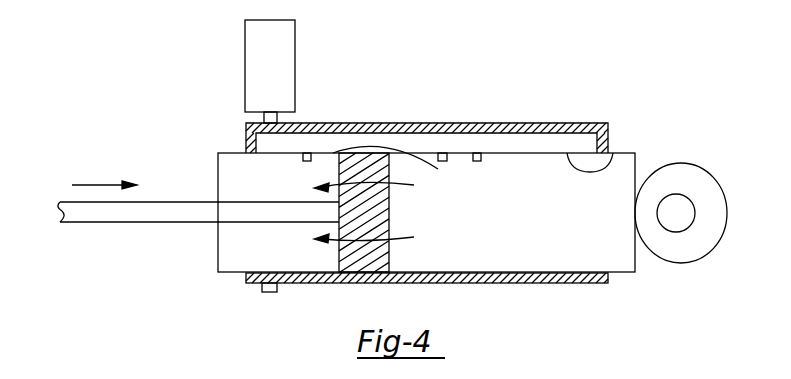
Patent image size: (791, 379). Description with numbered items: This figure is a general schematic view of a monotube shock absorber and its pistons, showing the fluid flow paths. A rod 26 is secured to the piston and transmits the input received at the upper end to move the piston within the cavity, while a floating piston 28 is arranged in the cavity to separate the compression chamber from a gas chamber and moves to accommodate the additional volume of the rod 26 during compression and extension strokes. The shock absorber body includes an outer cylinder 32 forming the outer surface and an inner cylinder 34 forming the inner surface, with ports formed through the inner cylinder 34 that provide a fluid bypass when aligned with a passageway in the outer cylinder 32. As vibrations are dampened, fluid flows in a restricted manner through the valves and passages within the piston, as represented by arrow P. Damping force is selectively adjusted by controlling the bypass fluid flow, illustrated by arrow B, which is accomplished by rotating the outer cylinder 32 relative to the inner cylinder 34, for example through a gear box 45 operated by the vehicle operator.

The gear box 45 is at (295, 42).
The rod 26 is at (308, 160).
The floating piston 28 is at (527, 143).
The outer cylinder 32 is at (587, 123).
The inner cylinder 34 is at (613, 153).
The arrow B is at (433, 168).
The arrow P is at (414, 237).